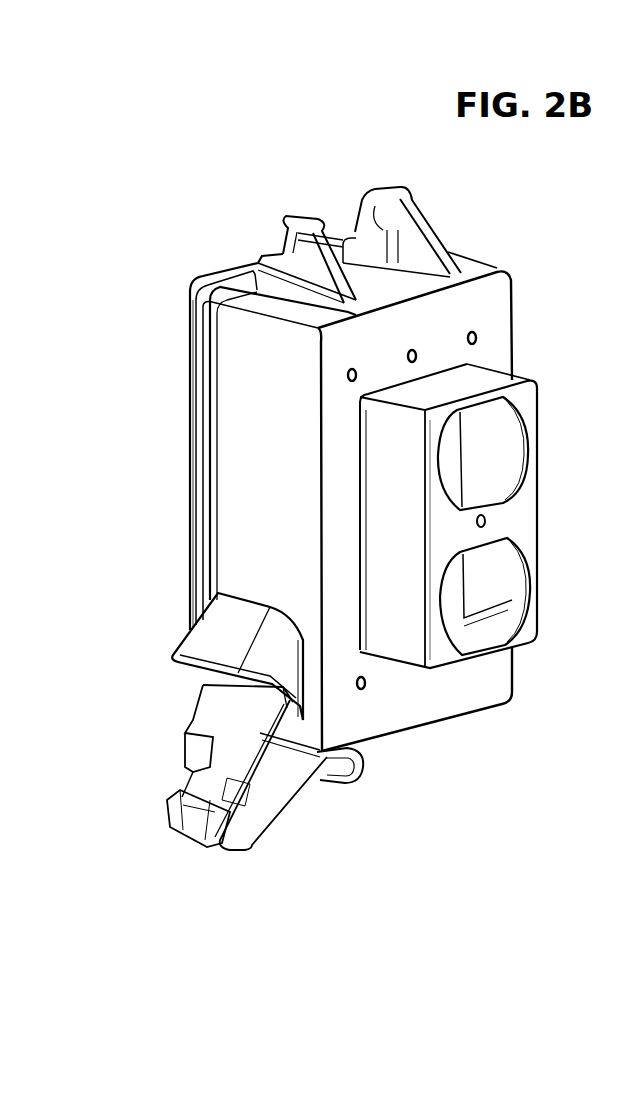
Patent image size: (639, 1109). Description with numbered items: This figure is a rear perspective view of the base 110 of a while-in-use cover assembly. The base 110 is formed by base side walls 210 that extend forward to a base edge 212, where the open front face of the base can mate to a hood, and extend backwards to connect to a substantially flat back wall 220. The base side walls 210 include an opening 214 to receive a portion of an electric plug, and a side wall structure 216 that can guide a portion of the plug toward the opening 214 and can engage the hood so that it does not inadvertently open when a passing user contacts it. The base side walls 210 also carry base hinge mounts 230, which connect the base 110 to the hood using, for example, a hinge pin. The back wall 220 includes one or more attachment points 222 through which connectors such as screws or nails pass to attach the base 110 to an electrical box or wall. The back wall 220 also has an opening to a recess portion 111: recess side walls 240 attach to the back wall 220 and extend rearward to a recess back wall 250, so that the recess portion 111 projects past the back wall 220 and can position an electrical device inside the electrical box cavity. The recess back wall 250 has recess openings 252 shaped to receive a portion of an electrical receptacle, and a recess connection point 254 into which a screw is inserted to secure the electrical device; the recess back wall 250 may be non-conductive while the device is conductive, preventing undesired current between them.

The base 110 is at (192, 175).
The recess portion 111 is at (522, 358).
The base side walls 210 is at (447, 763).
The base edge 212 is at (196, 455).
The opening 214 is at (180, 670).
The side wall structure 216 is at (167, 815).
The back wall 220 is at (474, 677).
The attachment points 222 is at (355, 368).
The base hinge mounts 230 is at (425, 185).
The recess side walls 240 is at (523, 752).
The recess back wall 250 is at (448, 540).
The recess openings 252 is at (448, 472).
The recess connection point 254 is at (485, 520).